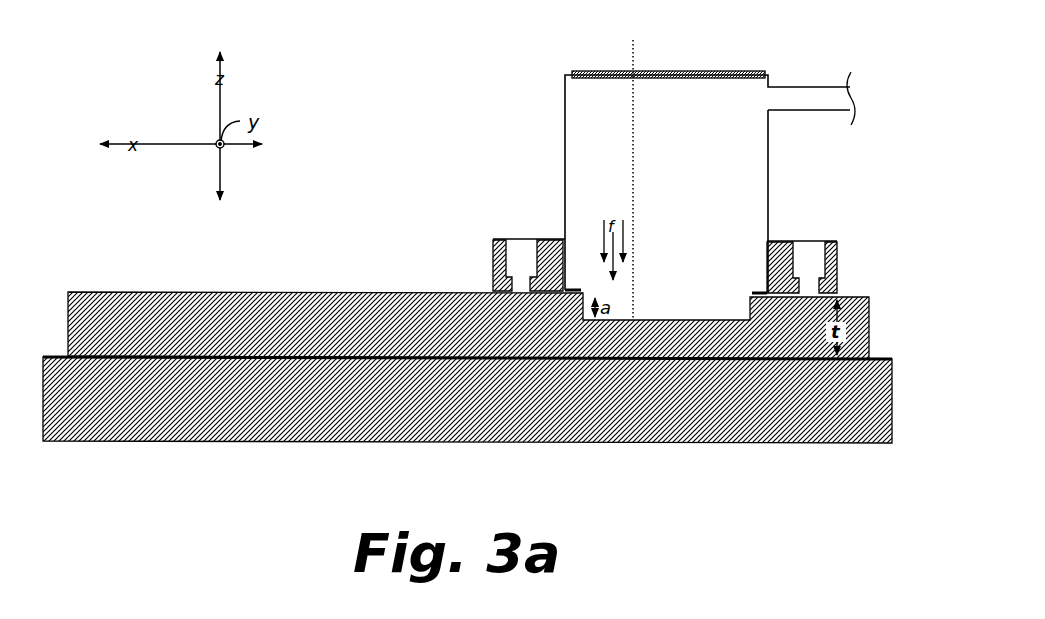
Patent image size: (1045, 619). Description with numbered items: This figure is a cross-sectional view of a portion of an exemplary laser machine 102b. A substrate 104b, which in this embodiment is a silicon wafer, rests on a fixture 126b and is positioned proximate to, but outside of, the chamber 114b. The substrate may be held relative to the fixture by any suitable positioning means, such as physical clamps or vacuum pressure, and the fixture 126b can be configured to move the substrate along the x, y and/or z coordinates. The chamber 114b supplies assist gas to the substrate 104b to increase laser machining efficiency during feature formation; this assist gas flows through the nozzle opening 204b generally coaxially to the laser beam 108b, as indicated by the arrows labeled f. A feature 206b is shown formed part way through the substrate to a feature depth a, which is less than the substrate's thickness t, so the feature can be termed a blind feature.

The laser machine 102b is at (387, 135).
The substrate 104b is at (468, 325).
The laser beam 108b is at (637, 51).
The chamber 114b is at (563, 128).
The fixture 126b is at (467, 400).
The nozzle opening 204b is at (647, 284).
The feature 206b is at (778, 326).